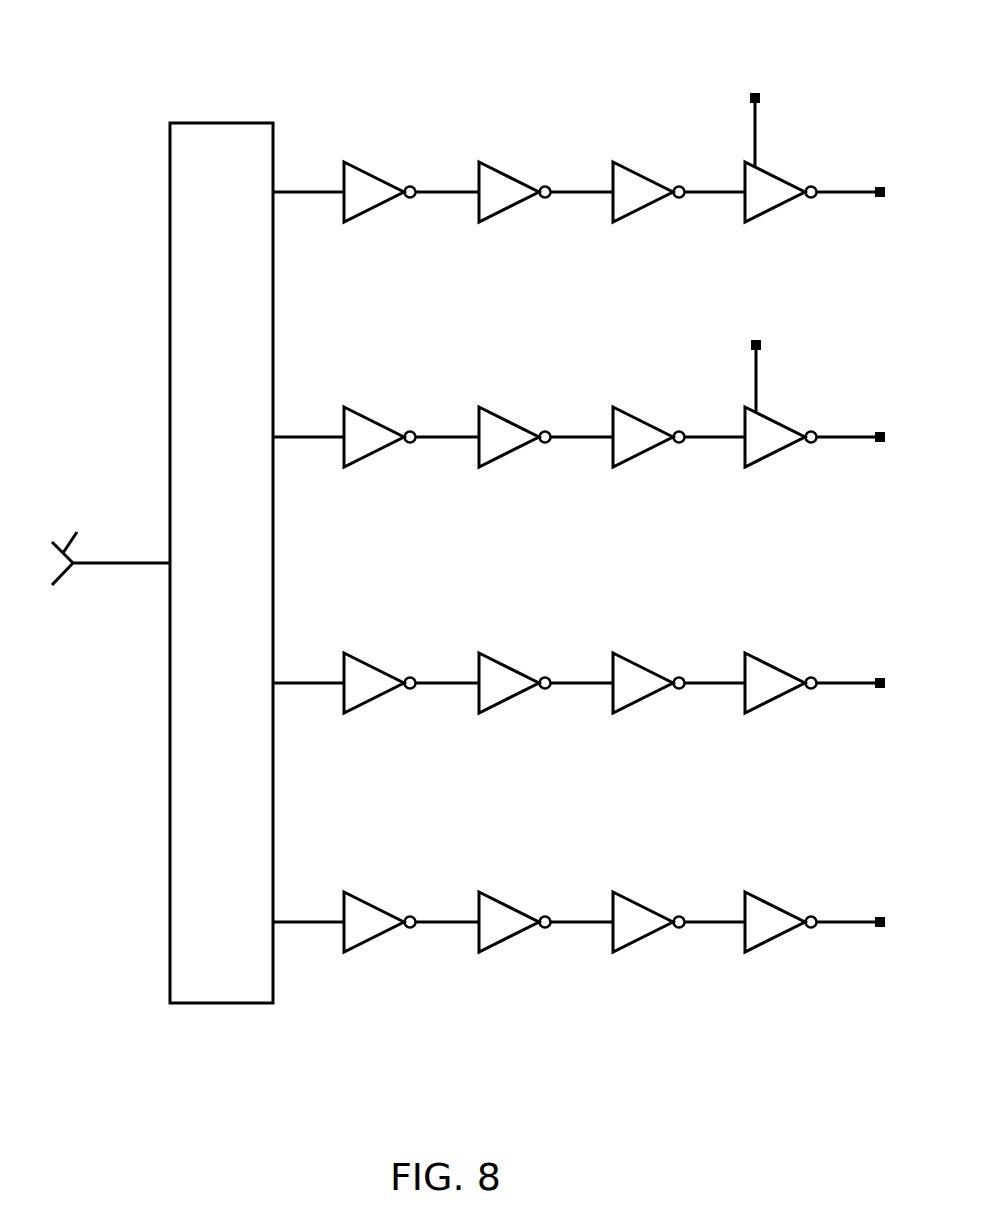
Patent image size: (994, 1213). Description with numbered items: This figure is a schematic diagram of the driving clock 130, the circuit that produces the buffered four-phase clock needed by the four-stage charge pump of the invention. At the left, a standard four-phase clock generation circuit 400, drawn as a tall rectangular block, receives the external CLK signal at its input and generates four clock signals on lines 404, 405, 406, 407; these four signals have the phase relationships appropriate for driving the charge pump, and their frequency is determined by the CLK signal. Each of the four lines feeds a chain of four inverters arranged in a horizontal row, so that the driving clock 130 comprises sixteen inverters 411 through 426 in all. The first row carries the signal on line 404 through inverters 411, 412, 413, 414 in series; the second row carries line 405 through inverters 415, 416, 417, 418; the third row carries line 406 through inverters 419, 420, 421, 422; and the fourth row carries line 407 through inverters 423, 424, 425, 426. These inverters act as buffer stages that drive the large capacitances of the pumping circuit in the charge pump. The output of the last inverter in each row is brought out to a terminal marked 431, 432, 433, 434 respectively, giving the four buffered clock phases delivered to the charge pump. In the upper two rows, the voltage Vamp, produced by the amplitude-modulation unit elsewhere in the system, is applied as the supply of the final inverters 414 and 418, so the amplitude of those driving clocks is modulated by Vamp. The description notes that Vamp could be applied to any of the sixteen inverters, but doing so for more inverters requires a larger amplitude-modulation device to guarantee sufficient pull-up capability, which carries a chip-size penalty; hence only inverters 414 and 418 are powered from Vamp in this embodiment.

The driving clock 130 is at (513, 73).
The four-phase clock generation circuit 400 is at (222, 123).
The line 404 is at (288, 189).
The line 405 is at (288, 434).
The line 406 is at (288, 681).
The line 407 is at (288, 919).
The inverter 411 is at (372, 175).
The inverter 412 is at (504, 174).
The inverter 413 is at (634, 172).
The inverter 414 is at (744, 204).
The inverter 415 is at (370, 420).
The inverter 416 is at (505, 420).
The inverter 417 is at (638, 420).
The inverter 418 is at (744, 448).
The inverter 419 is at (373, 664).
The inverter 420 is at (507, 664).
The inverter 421 is at (638, 663).
The inverter 422 is at (744, 698).
The inverter 423 is at (372, 902).
The inverter 424 is at (507, 902).
The inverter 425 is at (638, 902).
The inverter 426 is at (744, 937).
The output line 431 is at (839, 188).
The output line 432 is at (840, 433).
The output line 433 is at (840, 678).
The output line 434 is at (840, 916).